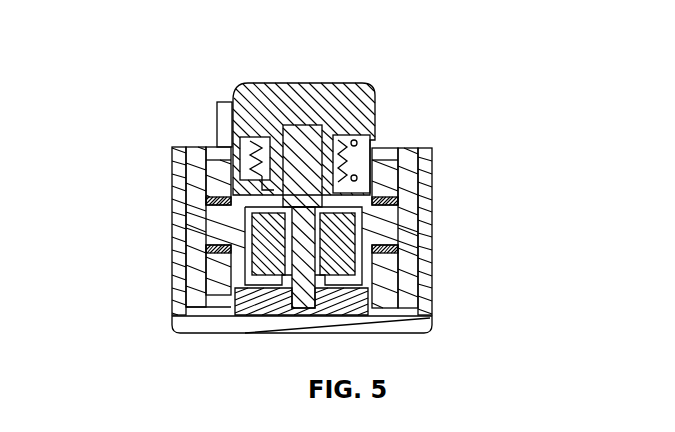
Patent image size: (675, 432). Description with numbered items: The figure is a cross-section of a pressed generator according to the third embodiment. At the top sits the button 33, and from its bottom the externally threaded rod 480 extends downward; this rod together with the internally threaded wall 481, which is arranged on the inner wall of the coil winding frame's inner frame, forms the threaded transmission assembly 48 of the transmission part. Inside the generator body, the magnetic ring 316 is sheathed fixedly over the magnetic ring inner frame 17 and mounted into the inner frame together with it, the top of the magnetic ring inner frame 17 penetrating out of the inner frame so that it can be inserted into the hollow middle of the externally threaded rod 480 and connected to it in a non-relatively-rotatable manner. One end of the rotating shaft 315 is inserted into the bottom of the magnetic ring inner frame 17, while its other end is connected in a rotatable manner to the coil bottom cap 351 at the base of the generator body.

The magnetic ring inner frame 17 is at (310, 180).
The button 33 is at (279, 103).
The threaded transmission assembly 48 is at (210, 115).
The externally threaded rod 480 is at (171, 108).
The internally threaded wall 481 is at (240, 115).
The magnetic ring 316 is at (308, 263).
The rotating shaft 315 is at (343, 235).
The coil bottom cap 351 is at (343, 305).